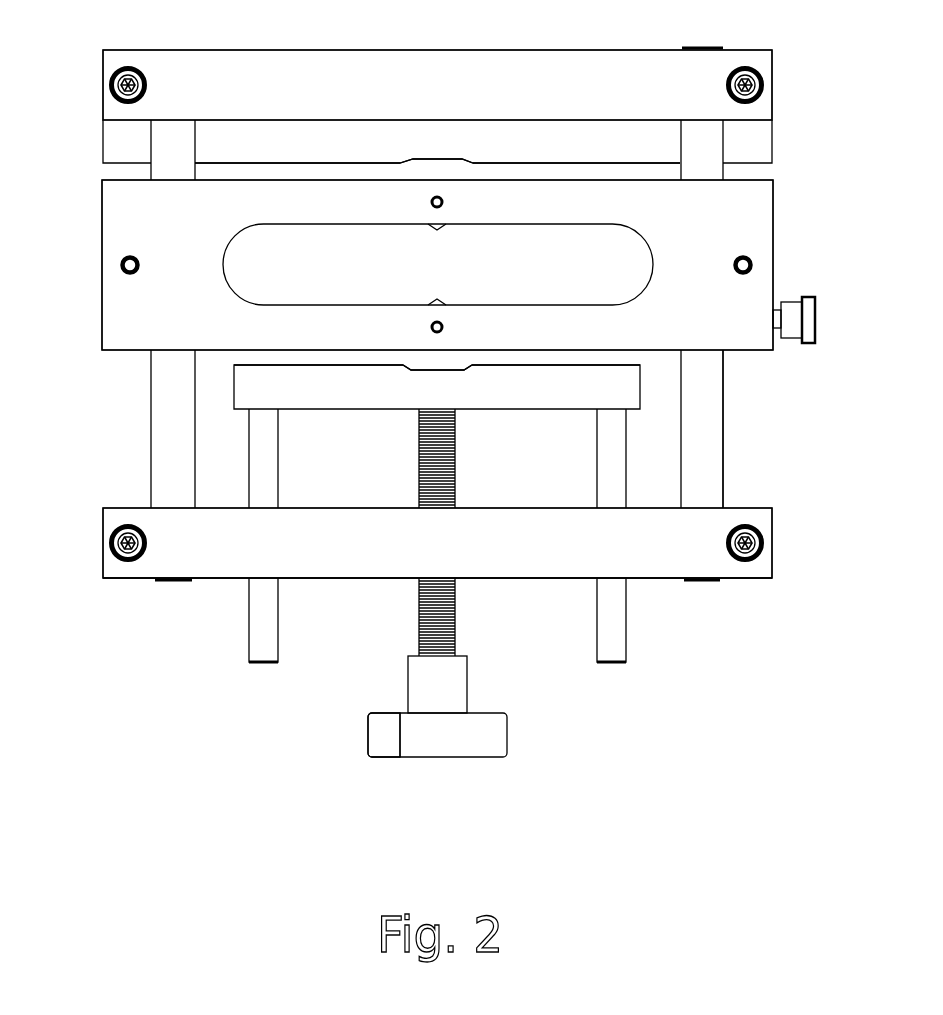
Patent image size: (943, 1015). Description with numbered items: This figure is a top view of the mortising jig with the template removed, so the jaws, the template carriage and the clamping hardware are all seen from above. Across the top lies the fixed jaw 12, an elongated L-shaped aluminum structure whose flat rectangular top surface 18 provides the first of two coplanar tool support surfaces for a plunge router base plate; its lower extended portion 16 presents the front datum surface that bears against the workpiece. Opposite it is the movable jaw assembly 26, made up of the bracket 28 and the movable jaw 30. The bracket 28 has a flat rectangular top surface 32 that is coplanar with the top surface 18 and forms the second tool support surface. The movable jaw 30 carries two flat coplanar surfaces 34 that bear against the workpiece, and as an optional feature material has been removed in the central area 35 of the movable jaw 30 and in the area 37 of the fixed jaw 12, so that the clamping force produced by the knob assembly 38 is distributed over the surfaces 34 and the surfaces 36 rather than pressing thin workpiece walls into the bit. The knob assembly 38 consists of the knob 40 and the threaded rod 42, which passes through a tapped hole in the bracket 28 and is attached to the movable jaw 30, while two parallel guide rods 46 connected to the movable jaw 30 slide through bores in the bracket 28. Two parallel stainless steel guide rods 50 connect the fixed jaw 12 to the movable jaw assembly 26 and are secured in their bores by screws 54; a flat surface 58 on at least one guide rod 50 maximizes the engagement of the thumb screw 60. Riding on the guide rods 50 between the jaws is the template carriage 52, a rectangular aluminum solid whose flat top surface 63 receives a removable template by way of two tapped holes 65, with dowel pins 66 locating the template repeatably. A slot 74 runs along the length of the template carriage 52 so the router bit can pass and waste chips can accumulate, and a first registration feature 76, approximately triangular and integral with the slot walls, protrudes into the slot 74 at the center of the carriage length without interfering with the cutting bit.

The fixed jaw 12 is at (102, 48).
The lower extended portion 16 is at (122, 142).
The top surface 18 is at (432, 92).
The movable jaw assembly 26 is at (102, 507).
The bracket 28 is at (243, 550).
The movable jaw 30 is at (323, 410).
The top surface 32 is at (429, 561).
The coplanar surfaces 34 is at (307, 367).
The material-removed area 35 is at (437, 372).
The surfaces 36 is at (300, 162).
The material-removed area 37 is at (437, 160).
The knob assembly 38 is at (510, 733).
The knob 40 is at (370, 742).
The threaded rod 42 is at (455, 628).
The guide rods 46 is at (257, 667).
The guide rods 50 is at (166, 423).
The template carriage 52 is at (102, 180).
The screws 54 is at (145, 82).
The flat surface 58 is at (723, 442).
The thumb screw 60 is at (808, 315).
The top surface 63 is at (124, 236).
The tapped holes 65 is at (140, 269).
The dowel pins 66 is at (447, 202).
The slot 74 is at (242, 232).
The first registration feature 76 is at (447, 226).